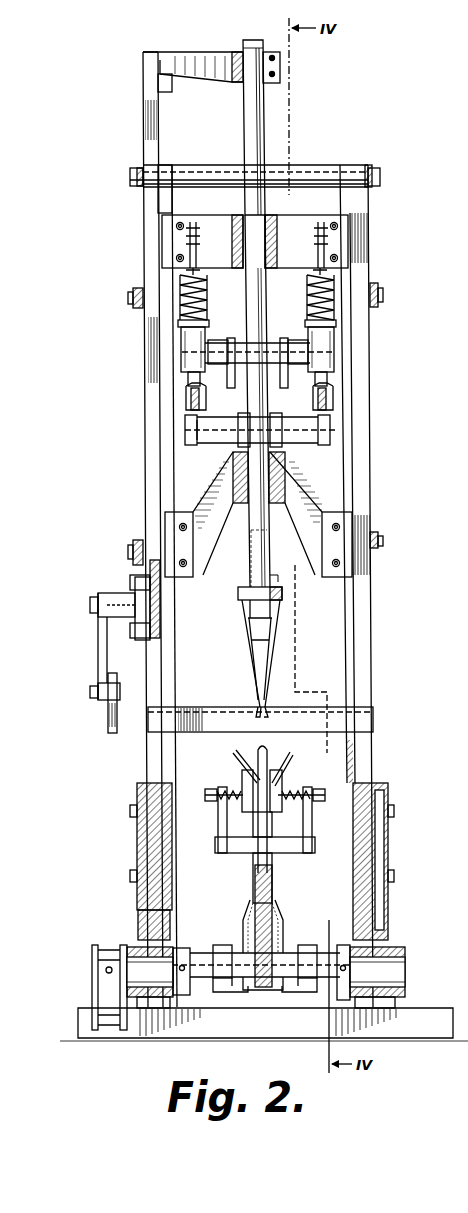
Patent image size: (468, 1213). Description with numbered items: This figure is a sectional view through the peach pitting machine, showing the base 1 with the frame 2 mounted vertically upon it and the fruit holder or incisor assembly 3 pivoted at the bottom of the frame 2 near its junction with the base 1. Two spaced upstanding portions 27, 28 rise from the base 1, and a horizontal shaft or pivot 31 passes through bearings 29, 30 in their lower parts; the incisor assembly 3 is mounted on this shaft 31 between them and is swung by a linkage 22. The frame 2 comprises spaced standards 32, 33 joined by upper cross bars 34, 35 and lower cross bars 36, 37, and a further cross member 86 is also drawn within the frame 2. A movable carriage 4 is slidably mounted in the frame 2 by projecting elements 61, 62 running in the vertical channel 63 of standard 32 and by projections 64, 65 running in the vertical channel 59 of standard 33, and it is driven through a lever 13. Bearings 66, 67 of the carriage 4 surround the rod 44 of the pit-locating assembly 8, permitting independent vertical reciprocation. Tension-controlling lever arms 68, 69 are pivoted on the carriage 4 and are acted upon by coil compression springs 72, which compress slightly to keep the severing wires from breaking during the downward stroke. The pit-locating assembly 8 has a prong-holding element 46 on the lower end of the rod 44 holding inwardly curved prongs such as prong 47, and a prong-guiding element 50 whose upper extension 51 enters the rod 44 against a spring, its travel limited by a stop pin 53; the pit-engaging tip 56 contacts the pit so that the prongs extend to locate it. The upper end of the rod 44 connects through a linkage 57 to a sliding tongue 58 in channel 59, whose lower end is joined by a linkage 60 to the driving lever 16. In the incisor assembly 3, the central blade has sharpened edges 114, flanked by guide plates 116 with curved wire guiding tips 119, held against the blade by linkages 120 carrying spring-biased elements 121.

The base 1 is at (395, 887).
The frame 2 is at (378, 656).
The fruit holder or incisor assembly 3 is at (268, 865).
The movable carriage 4 is at (232, 540).
The pit-locating assembly 8 is at (240, 600).
The lever 13 is at (228, 345).
The lever 16 is at (108, 720).
The linkage 22 is at (92, 993).
The upstanding portion 27 is at (372, 790).
The upstanding portion 28 is at (137, 790).
The bearing 29 is at (400, 952).
The bearing 30 is at (143, 942).
The shaft or pivot 31 is at (289, 962).
The standard 32 is at (357, 460).
The standard 33 is at (163, 458).
The upper cross bar 34 is at (376, 288).
The upper cross bar 35 is at (133, 296).
The lower cross bar 36 is at (378, 540).
The lower cross bar 37 is at (133, 553).
The rod 44 is at (265, 134).
The prong-holding element 46 is at (282, 593).
The prong 47 is at (250, 628).
The prong-guiding element 50 is at (258, 660).
The upper extension 51 is at (261, 545).
The stop pin 53 is at (278, 576).
The pit-engaging tip 56 is at (255, 710).
The linkage 57 is at (232, 55).
The sliding tongue 58 is at (156, 132).
The vertical channel 59 is at (168, 345).
The linkage 60 is at (98, 640).
The projecting element 61 is at (346, 237).
The projecting element 62 is at (343, 518).
The vertical channel 63 is at (356, 385).
The projection 64 is at (165, 233).
The projection 65 is at (168, 530).
The bearing 66 is at (236, 215).
The bearing 67 is at (242, 487).
The tension-controlling lever arm 68 is at (333, 420).
The tension-controlling lever arm 69 is at (192, 420).
The coil compression spring 72 is at (182, 305).
The crossbar 86 is at (332, 712).
The sharpened edge 114 is at (258, 750).
The guide plate 116 is at (255, 892).
The wire guiding tip 119 is at (245, 770).
The linkage 120 is at (222, 826).
The spring-biased element 121 is at (243, 795).